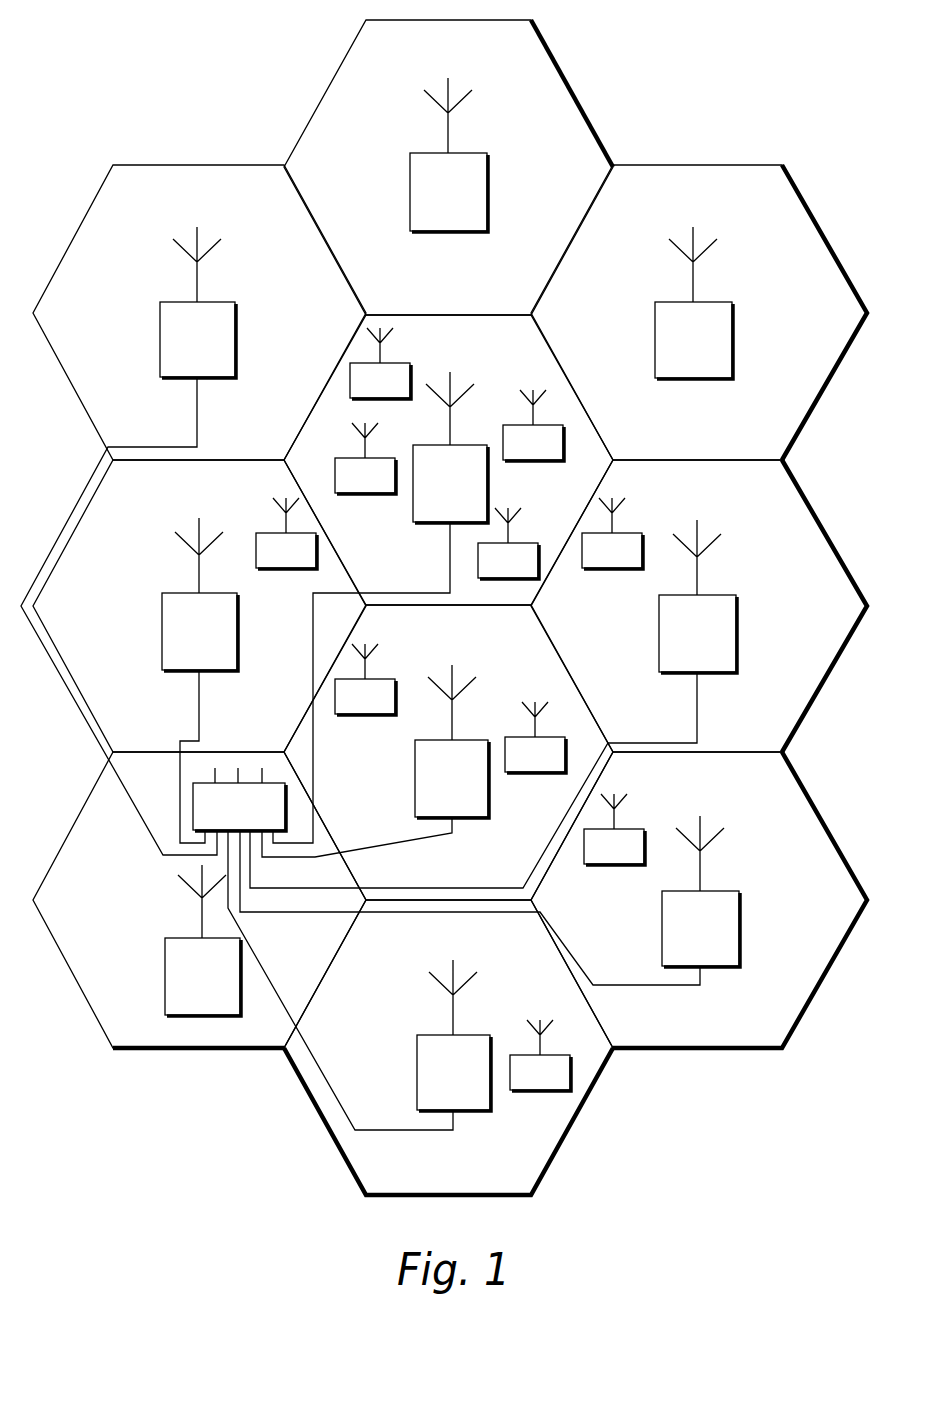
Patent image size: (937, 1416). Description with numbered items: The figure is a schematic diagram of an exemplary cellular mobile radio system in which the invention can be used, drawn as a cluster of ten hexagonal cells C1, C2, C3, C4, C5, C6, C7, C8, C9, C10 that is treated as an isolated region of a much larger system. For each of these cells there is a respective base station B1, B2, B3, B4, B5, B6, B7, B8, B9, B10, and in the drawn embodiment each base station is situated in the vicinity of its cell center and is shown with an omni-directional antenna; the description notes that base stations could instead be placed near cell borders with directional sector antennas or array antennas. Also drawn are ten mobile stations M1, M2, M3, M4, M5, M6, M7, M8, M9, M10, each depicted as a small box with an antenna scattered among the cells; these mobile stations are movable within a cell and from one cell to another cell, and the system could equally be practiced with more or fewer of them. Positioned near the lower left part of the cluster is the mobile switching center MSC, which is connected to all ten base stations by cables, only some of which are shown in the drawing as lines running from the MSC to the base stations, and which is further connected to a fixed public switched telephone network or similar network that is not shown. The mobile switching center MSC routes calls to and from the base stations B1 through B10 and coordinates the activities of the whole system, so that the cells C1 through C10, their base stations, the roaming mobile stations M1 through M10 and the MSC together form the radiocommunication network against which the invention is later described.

The cell C1 is at (390, 584).
The cell C2 is at (637, 442).
The cell C3 is at (641, 733).
The cell C4 is at (395, 879).
The cell C5 is at (142, 732).
The cell C6 is at (140, 440).
The cell C7 is at (390, 293).
The cell C8 is at (646, 1030).
The cell C9 is at (397, 1172).
The cell C10 is at (153, 1025).
The base station B1 is at (380, 607).
The base station B2 is at (694, 303).
The base station B3 is at (493, 704).
The base station B4 is at (375, 761).
The base station B5 is at (200, 680).
The base station B6 is at (128, 541).
The base station B7 is at (449, 155).
The base station B8 is at (490, 900).
The base station B9 is at (359, 980).
The base station B10 is at (203, 940).
The mobile station M1 is at (614, 829).
The mobile station M2 is at (286, 533).
The mobile station M3 is at (365, 458).
The mobile station M4 is at (533, 425).
The mobile station M5 is at (612, 533).
The mobile station M6 is at (380, 363).
The mobile station M7 is at (508, 543).
The mobile station M8 is at (535, 737).
The mobile station M9 is at (365, 679).
The mobile station M10 is at (540, 1055).
The mobile switching center MSC is at (239, 799).